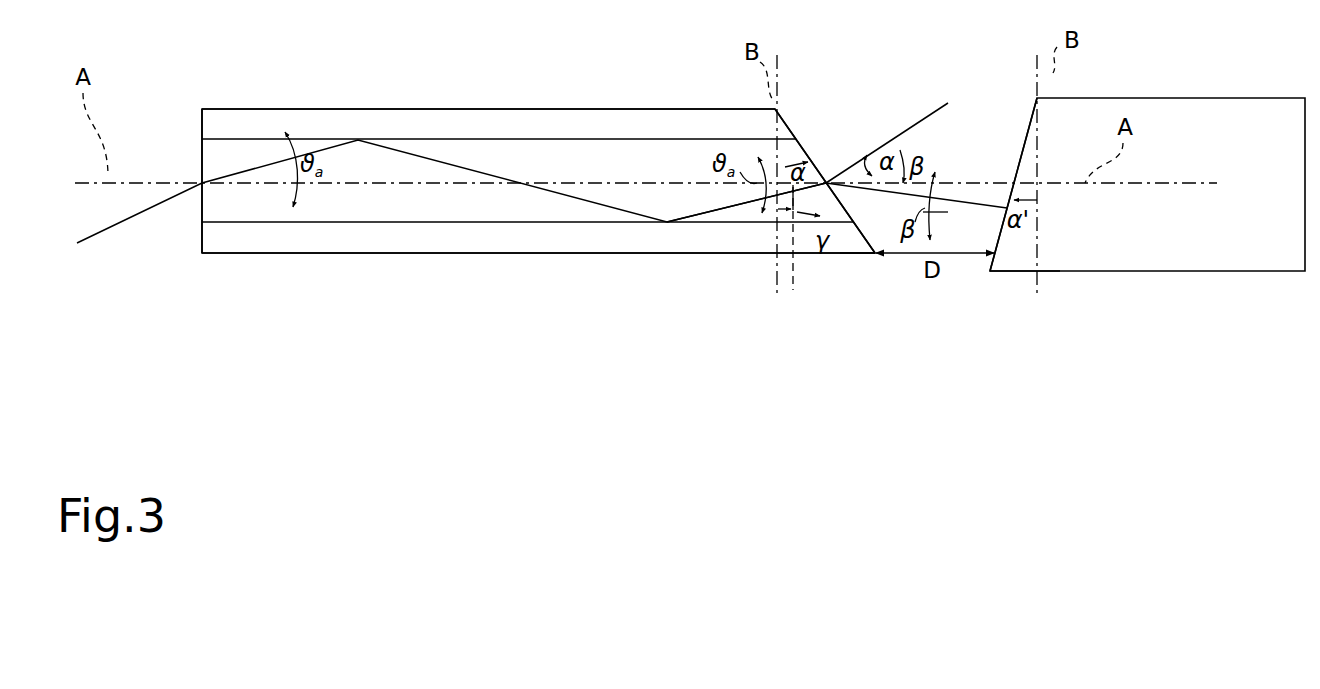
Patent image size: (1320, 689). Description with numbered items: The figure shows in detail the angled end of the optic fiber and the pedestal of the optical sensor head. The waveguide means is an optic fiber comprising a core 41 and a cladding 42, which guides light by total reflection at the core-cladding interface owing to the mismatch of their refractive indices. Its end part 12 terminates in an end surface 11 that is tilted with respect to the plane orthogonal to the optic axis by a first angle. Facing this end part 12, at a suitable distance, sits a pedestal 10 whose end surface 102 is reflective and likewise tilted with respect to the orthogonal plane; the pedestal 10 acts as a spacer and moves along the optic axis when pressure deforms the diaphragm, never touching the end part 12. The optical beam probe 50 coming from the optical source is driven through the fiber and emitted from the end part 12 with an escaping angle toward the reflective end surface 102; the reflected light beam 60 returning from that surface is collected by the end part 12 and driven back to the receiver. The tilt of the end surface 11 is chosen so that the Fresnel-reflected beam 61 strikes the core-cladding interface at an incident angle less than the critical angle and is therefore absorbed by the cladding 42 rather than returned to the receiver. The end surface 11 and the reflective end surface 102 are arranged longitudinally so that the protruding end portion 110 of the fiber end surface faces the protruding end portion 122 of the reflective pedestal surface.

The pedestal 10 is at (1172, 113).
The end surface 11 is at (800, 137).
The end part 12 is at (528, 103).
The core 41 is at (258, 202).
The cladding 42 is at (488, 240).
The optical beam probe 50 is at (898, 218).
The reflected light beam 60 is at (960, 181).
The reflected beam 61 is at (815, 193).
The end surface 102 is at (987, 265).
The protruding end portion 110 is at (857, 257).
The protruding end portion 122 is at (993, 272).